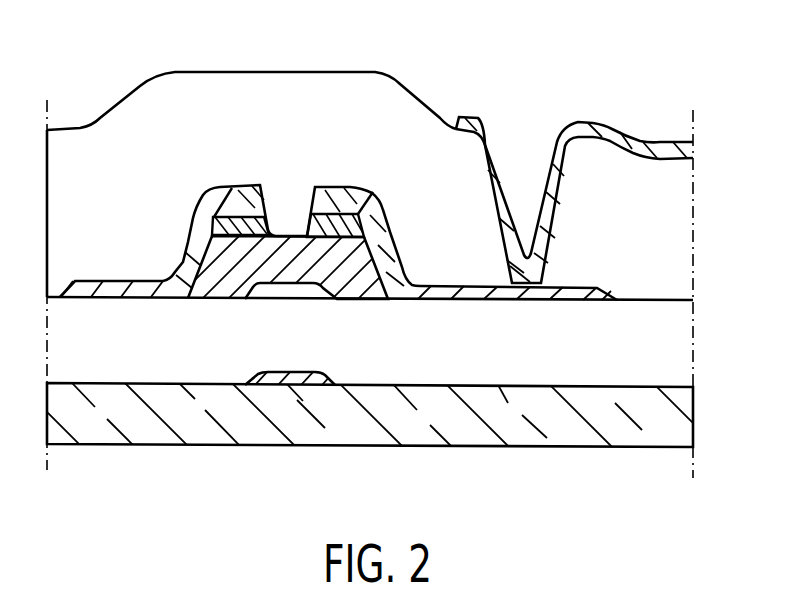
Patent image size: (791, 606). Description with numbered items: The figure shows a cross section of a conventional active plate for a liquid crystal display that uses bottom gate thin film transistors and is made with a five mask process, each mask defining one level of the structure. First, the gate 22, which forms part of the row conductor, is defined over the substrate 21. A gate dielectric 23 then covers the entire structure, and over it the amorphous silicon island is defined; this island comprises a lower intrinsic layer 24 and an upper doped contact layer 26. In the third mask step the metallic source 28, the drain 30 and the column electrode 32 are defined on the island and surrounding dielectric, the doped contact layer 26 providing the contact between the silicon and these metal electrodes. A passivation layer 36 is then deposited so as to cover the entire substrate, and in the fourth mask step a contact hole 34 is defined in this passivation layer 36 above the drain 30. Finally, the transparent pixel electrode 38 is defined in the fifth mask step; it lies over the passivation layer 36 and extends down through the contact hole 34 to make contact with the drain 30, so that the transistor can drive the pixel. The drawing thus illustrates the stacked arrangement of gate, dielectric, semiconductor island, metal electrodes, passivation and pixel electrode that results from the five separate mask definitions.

The substrate 21 is at (505, 430).
The gate 22 is at (280, 382).
The gate dielectric 23 is at (673, 352).
The lower intrinsic layer 24 is at (203, 252).
The upper doped contact layer 26 is at (222, 217).
The source 28 is at (250, 192).
The drain 30 is at (415, 290).
The column electrode 32 is at (87, 287).
The contact hole 34 is at (538, 113).
The passivation layer 36 is at (670, 222).
The transparent pixel electrode 38 is at (620, 132).